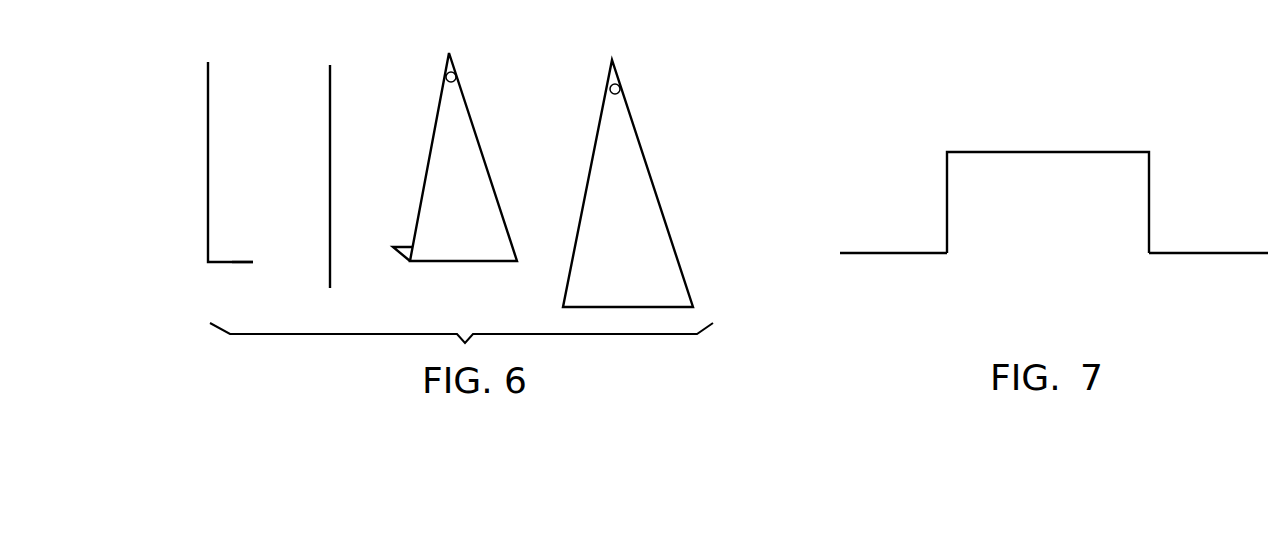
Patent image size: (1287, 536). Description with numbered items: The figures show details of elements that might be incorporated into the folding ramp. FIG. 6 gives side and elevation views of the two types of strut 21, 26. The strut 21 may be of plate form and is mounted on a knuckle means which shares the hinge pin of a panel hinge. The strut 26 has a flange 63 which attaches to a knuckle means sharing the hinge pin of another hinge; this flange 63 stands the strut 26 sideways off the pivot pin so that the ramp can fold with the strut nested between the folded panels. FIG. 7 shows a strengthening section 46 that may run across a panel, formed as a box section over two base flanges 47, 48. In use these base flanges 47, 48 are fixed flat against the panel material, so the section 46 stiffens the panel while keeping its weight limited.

In FIG. 6, the strut 26 is at (210, 177).
In FIG. 6, the strut 21 is at (332, 155).
In FIG. 6, the flange 63 is at (232, 262).
In FIG. 7, the section 46 is at (1076, 152).
In FIG. 7, the base flange 47 is at (875, 253).
In FIG. 7, the base flange 48 is at (1203, 253).